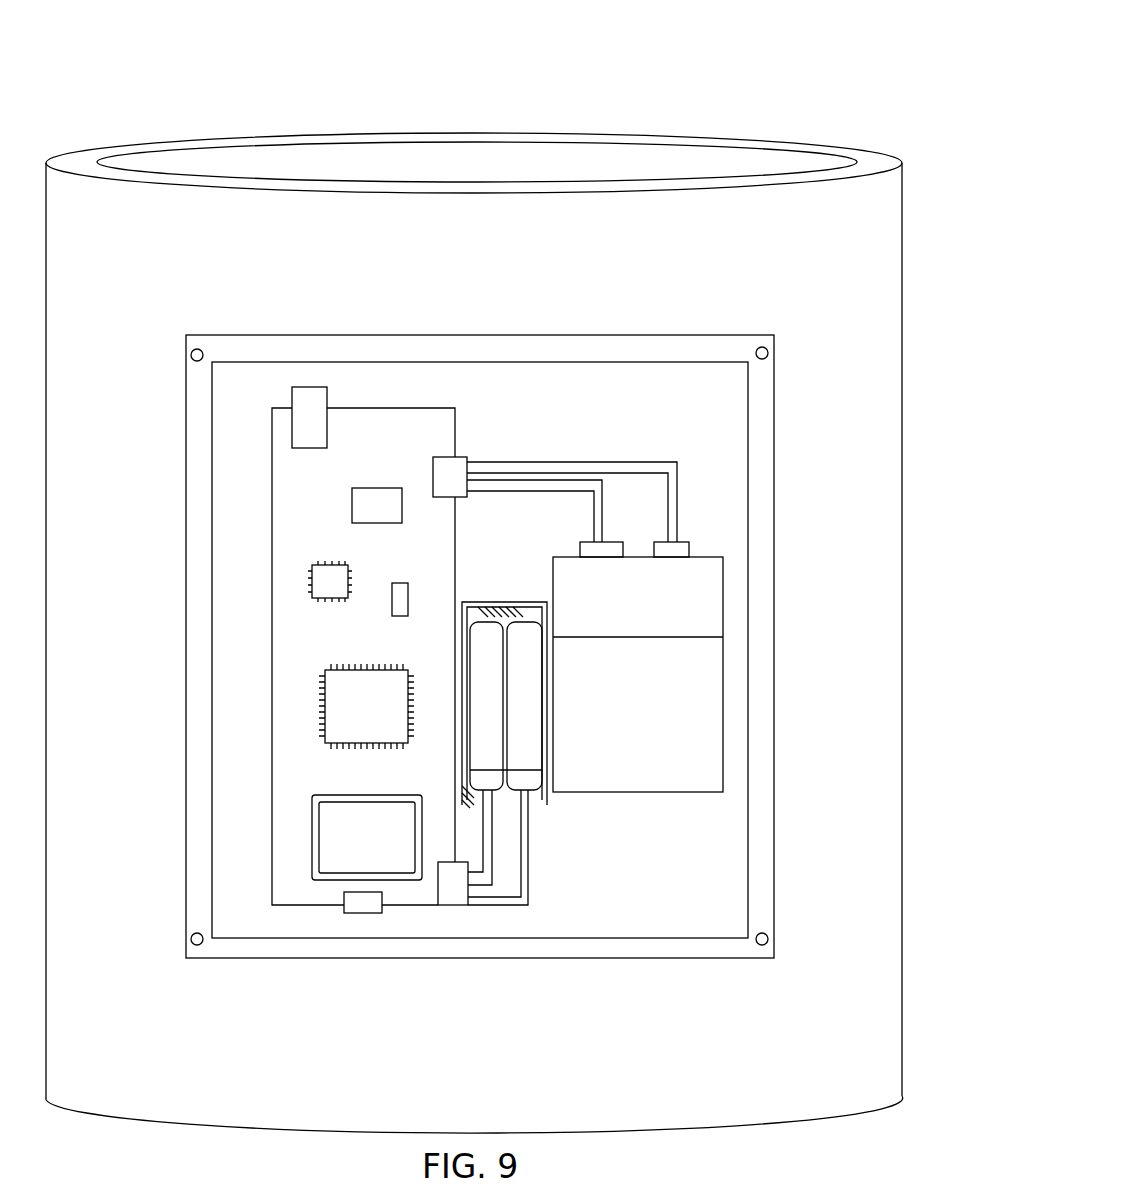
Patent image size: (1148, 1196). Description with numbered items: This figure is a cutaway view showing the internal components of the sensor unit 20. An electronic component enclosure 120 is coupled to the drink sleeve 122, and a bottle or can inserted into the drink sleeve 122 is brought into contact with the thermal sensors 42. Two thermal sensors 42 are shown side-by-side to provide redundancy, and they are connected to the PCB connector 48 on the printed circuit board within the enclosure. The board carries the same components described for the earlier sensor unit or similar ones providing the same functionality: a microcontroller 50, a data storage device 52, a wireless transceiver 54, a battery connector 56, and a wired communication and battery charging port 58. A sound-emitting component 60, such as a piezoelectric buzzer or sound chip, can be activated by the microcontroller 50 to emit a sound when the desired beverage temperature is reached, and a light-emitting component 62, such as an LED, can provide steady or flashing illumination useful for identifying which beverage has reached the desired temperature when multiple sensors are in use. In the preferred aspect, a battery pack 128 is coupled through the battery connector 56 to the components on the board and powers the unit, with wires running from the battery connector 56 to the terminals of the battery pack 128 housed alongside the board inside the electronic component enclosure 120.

The sensor unit 20 is at (860, 122).
The drink sleeve 122 is at (730, 1055).
The electronic component enclosure 120 is at (725, 918).
The wired communication and battery charging port 58 is at (307, 397).
The battery connector 56 is at (455, 470).
The component for emitting a sound 60 is at (365, 508).
The data storage device 52 is at (325, 582).
The component for emitting a light 62 is at (400, 590).
The microcontroller 50 is at (338, 717).
The wireless transceiver 54 is at (333, 850).
The battery 128 is at (657, 685).
The thermal sensor 42 is at (478, 755).
The PCB connector 48 is at (447, 897).